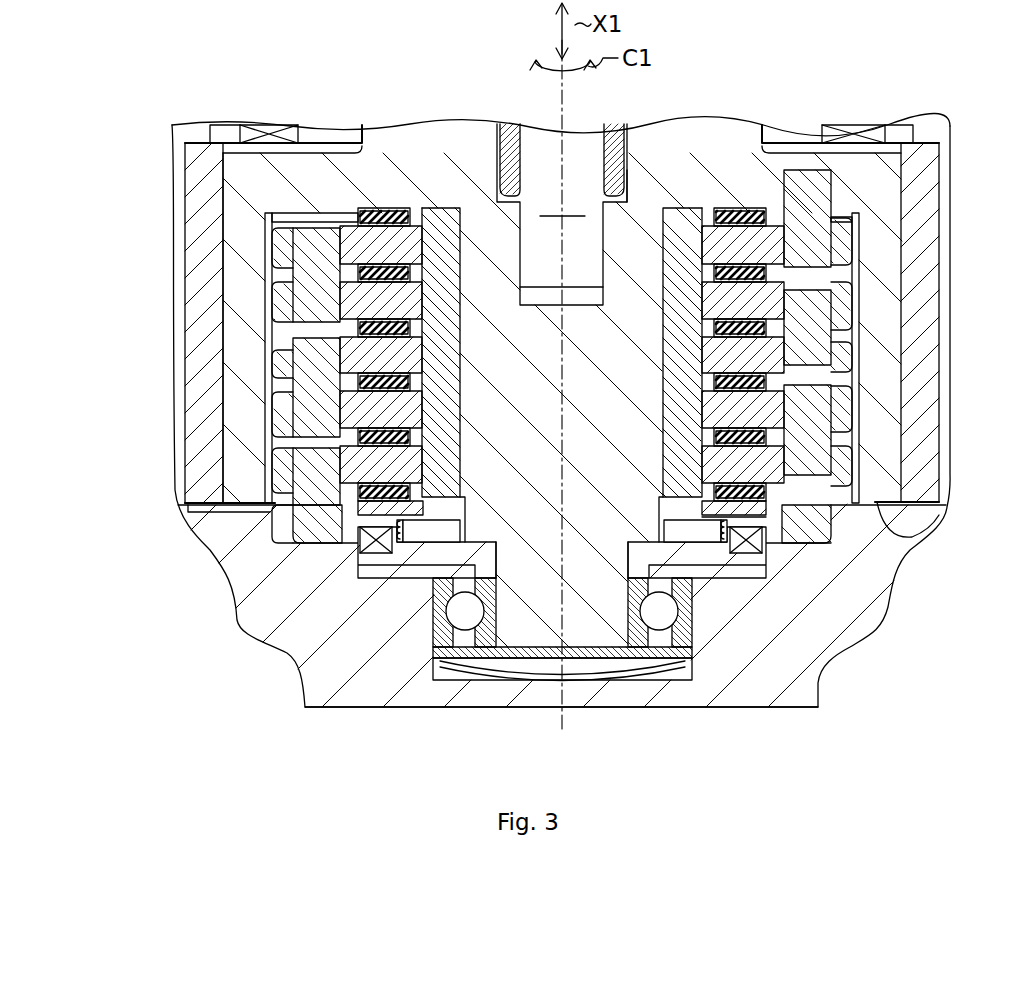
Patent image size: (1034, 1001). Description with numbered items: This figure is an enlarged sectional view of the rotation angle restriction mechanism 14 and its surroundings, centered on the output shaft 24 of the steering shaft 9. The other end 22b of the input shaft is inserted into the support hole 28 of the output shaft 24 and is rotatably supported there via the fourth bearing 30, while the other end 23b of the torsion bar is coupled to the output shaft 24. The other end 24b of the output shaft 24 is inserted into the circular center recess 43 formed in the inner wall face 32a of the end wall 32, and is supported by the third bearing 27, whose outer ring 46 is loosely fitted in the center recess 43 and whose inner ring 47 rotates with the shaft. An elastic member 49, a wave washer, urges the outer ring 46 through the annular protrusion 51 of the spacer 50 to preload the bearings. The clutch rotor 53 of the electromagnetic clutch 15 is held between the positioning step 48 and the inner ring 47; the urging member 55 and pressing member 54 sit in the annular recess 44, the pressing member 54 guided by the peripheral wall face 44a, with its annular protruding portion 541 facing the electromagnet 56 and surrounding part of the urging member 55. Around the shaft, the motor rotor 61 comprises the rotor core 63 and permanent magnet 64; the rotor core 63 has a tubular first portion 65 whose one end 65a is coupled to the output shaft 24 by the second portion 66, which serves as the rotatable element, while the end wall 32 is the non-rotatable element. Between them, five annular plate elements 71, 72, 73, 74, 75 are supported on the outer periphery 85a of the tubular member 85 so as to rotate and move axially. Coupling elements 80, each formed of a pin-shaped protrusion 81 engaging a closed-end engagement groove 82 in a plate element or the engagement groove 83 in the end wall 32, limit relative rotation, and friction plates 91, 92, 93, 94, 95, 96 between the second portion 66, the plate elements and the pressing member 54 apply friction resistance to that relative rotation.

The steering shaft 9 is at (700, 118).
The rotation angle restriction mechanism 14 is at (858, 370).
The electromagnetic clutch 15 is at (790, 580).
The other end of the input shaft 22b is at (611, 130).
The other end of the torsion bar 23b is at (547, 270).
The output shaft 24 is at (418, 533).
The other end of the output shaft 24b is at (570, 640).
The third bearing 27 is at (658, 632).
The support hole 28 is at (513, 130).
The fourth bearing 30 is at (652, 140).
The end wall 32 is at (812, 708).
The inner wall face 32a is at (915, 532).
The center recess 43 is at (440, 650).
The annular recess 44 is at (330, 600).
The peripheral wall face 44a is at (262, 560).
The outer ring 46 is at (463, 632).
The inner ring 47 is at (483, 650).
The positioning step 48 is at (628, 548).
The elastic member 49 is at (600, 665).
The spacer 50 is at (505, 660).
The annular protrusion 51 is at (432, 525).
The clutch rotor 53 is at (745, 560).
The pressing member 54 is at (770, 545).
The urging member 55 is at (724, 545).
The electromagnet 56 is at (772, 552).
The motor rotor 61 is at (940, 190).
The rotor core 63 is at (220, 342).
The permanent magnet 64 is at (195, 165).
The first portion 65 is at (232, 465).
The one end of the first portion 65a is at (232, 207).
The second portion 66 is at (312, 180).
The plate element 71 is at (858, 252).
The plate element 72 is at (850, 300).
The plate element 73 is at (800, 330).
The plate element 74 is at (800, 420).
The plate element 75 is at (845, 485).
The coupling element 80 is at (537, 376).
The protrusion 81 is at (300, 262).
The engagement groove 82 is at (286, 285).
The engagement groove 83 is at (205, 544).
The tubular member 85 is at (440, 212).
The outer periphery of the tubular member 85a is at (388, 207).
The friction plate 91 is at (362, 214).
The friction plate 92 is at (367, 257).
The friction plate 93 is at (362, 300).
The friction plate 94 is at (362, 355).
The friction plate 95 is at (362, 410).
The friction plate 96 is at (300, 491).
The annular protruding portion 541 is at (397, 523).